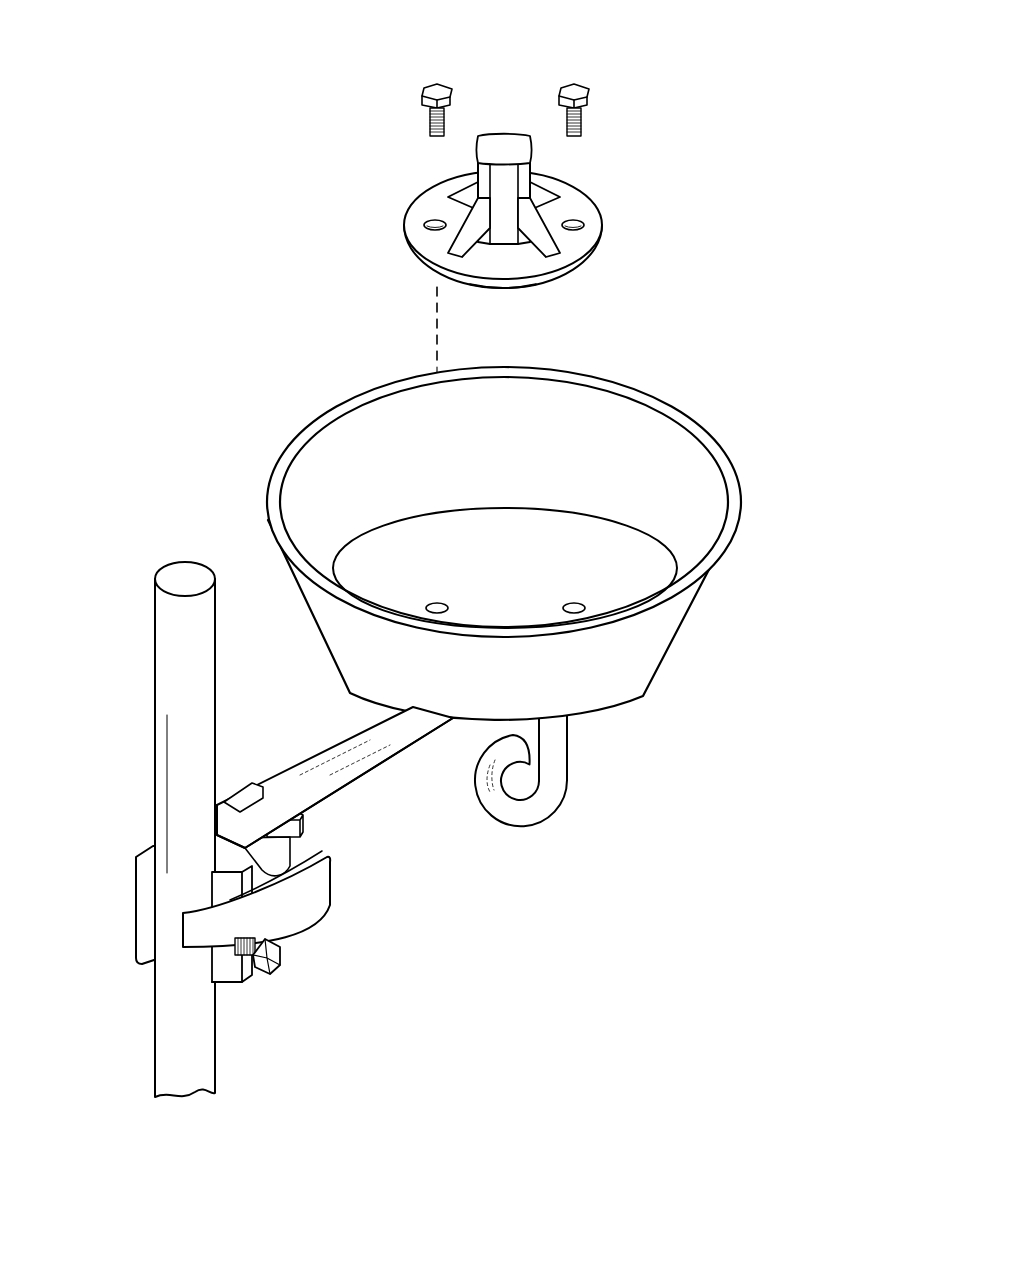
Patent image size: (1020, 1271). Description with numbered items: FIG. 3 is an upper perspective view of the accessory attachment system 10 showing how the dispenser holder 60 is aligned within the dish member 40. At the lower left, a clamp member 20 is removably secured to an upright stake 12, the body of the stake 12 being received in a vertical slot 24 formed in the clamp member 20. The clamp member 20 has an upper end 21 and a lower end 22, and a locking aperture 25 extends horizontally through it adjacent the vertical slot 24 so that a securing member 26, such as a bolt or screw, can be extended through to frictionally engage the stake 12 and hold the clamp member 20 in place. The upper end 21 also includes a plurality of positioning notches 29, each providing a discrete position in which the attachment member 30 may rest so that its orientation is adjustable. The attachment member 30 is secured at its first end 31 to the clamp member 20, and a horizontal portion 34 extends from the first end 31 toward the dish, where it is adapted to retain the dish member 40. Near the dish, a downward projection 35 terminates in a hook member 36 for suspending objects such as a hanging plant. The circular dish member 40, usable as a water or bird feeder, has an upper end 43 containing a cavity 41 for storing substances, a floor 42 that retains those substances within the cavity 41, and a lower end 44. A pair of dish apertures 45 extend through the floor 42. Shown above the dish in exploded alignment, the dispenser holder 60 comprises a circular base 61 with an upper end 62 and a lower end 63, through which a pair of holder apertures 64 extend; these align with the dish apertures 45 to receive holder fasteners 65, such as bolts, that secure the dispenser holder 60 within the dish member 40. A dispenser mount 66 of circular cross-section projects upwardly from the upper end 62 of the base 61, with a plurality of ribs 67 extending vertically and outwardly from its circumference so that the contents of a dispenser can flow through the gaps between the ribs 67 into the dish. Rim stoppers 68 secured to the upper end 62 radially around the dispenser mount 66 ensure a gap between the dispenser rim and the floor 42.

The accessory attachment system 10 is at (172, 145).
The stake 12 is at (172, 633).
The clamp member 20 is at (135, 868).
The upper end 21 is at (254, 788).
The lower end 22 is at (227, 983).
The vertical slot 24 is at (148, 900).
The locking aperture 25 is at (210, 950).
The securing member 26 is at (270, 963).
The positioning notches 29 is at (326, 868).
The attachment member 30 is at (370, 730).
The first end 31 is at (232, 822).
The horizontal portion 34 is at (366, 770).
The downward projection 35 is at (570, 732).
The hook member 36 is at (528, 810).
The dish member 40 is at (347, 400).
The cavity 41 is at (323, 460).
The floor 42 is at (613, 557).
The upper end 43 is at (636, 382).
The lower end 44 is at (627, 688).
The dish apertures 45 is at (430, 607).
The dispenser holder 60 is at (415, 200).
The base 61 is at (600, 248).
The upper end 62 is at (587, 200).
The lower end 63 is at (511, 288).
The holder apertures 64 is at (424, 225).
The holder fasteners 65 is at (432, 90).
The dispenser mount 66 is at (503, 140).
The ribs 67 is at (478, 185).
The rim stoppers 68 is at (423, 240).